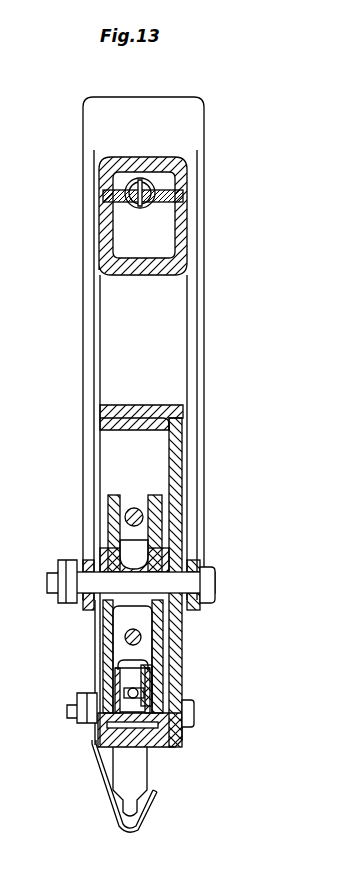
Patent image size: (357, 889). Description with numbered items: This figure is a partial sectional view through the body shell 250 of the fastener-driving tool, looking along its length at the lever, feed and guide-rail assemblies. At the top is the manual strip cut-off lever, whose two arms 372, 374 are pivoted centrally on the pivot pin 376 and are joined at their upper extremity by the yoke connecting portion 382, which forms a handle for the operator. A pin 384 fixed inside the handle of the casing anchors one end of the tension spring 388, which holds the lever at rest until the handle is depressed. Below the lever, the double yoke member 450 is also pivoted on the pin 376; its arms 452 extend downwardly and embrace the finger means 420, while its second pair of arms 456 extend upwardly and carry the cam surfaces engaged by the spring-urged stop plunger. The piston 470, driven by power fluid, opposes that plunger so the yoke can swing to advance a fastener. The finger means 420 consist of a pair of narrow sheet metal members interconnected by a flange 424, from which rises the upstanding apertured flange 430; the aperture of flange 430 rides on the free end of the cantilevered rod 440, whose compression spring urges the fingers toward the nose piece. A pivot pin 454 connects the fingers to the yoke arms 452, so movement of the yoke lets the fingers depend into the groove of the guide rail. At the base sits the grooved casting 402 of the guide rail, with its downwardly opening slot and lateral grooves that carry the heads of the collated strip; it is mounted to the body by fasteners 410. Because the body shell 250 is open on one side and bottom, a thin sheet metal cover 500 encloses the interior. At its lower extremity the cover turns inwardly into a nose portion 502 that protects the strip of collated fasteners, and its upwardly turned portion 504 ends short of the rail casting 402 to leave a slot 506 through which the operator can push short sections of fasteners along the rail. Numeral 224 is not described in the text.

The yoke connecting portion 382 is at (137, 114).
The pin 384 is at (105, 196).
The tension spring 388 is at (113, 216).
The arm 372 is at (88, 352).
The arm 374 is at (200, 355).
The sheet metal cover 500 is at (100, 425).
The body shell 250 is at (178, 456).
The piston 470 is at (134, 508).
The arms 456 is at (155, 506).
The double yoke member 450 is at (117, 559).
The pivot pin 376 is at (213, 575).
The arm members 452 is at (107, 628).
The upstanding apertured flange 430 is at (145, 626).
The rod 440 is at (125, 638).
The flange 424 is at (125, 668).
The finger means 420 is at (118, 684).
The pivot pin 454 is at (150, 690).
The fasteners 410 is at (196, 712).
The grooved casting 402 is at (110, 720).
The slot 506 is at (150, 771).
The nose portion 502 is at (103, 792).
The upwardly turned portion 504 is at (162, 797).
The member 224 is at (125, 888).